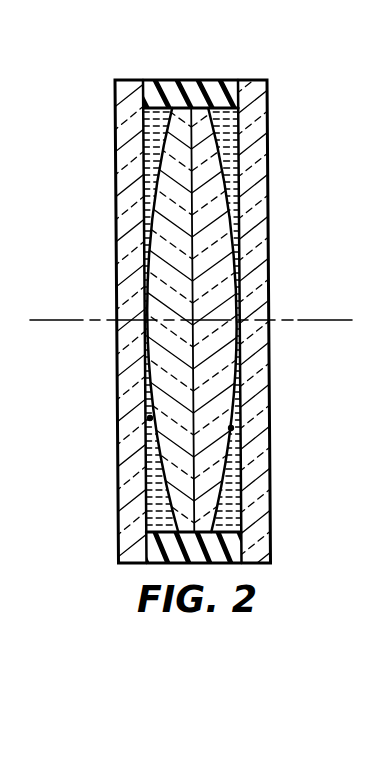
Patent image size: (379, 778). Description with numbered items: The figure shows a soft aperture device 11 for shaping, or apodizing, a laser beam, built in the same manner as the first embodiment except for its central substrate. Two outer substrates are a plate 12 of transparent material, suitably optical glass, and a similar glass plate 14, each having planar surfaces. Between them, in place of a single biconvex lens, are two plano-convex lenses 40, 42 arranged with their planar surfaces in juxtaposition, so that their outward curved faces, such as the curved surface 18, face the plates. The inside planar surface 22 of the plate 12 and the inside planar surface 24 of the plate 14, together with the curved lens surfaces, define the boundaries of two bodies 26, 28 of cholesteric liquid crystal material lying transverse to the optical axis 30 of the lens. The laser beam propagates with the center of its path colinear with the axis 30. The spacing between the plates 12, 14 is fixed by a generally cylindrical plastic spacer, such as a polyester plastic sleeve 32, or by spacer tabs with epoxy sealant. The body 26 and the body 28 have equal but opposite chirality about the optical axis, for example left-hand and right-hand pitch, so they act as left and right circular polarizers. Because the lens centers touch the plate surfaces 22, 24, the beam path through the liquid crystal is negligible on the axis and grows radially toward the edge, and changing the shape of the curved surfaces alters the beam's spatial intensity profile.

The soft aperture device 11 is at (207, 67).
The plate 12 is at (120, 370).
The glass plate 14 is at (258, 345).
The curved surface 18 is at (150, 418).
The inside planar surface 22 is at (148, 492).
The inside planar surface 24 is at (270, 504).
The body of cholesteric liquid crystal material 26 is at (151, 137).
The body of cholesteric liquid crystal material 28 is at (233, 134).
The optical axis 30 is at (54, 320).
The plastic sleeve 32 is at (156, 79).
The plano-convex lens 40 is at (147, 220).
The plano-convex lens 42 is at (240, 220).